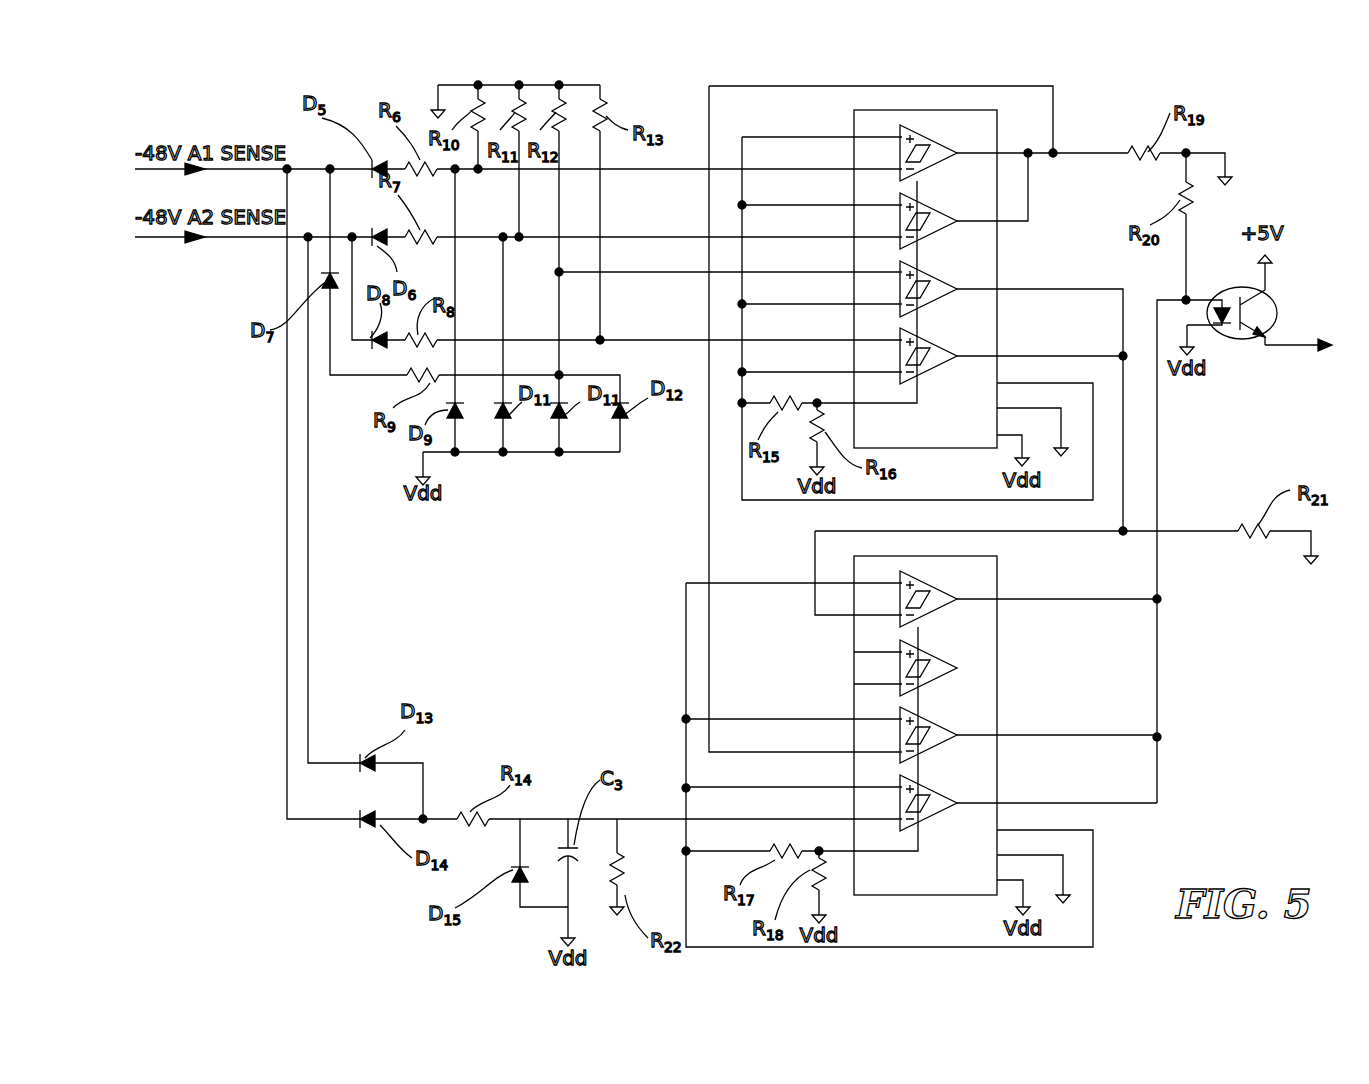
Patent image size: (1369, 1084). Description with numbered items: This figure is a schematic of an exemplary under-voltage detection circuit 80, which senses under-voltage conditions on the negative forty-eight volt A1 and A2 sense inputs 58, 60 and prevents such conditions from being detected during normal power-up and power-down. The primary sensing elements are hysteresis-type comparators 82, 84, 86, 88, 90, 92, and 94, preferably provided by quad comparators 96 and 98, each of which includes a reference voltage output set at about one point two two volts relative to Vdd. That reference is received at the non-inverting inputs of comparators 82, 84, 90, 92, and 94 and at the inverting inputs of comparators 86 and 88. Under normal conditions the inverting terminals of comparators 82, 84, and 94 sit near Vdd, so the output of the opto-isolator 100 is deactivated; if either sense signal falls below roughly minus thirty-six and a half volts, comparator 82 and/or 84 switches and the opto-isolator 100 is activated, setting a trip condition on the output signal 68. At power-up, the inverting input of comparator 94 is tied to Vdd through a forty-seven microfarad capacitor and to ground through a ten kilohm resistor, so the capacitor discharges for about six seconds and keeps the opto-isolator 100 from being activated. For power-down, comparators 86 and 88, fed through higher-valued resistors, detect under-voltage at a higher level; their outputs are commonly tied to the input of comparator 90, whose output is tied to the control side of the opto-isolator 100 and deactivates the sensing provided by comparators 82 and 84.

The -48V A1 sense input 58 is at (225, 169).
The -48V A2 sense input 60 is at (225, 237).
The output signal 68 is at (1275, 340).
The circuit 80 is at (377, 852).
The comparator 82 is at (928, 163).
The comparator 84 is at (928, 232).
The comparator 86 is at (928, 292).
The comparator 88 is at (945, 356).
The comparator 90 is at (928, 606).
The comparator 92 is at (940, 730).
The comparator 94 is at (937, 800).
The quad comparator 96 is at (908, 446).
The quad comparator 98 is at (878, 890).
The opto-isolator 100 is at (1233, 340).